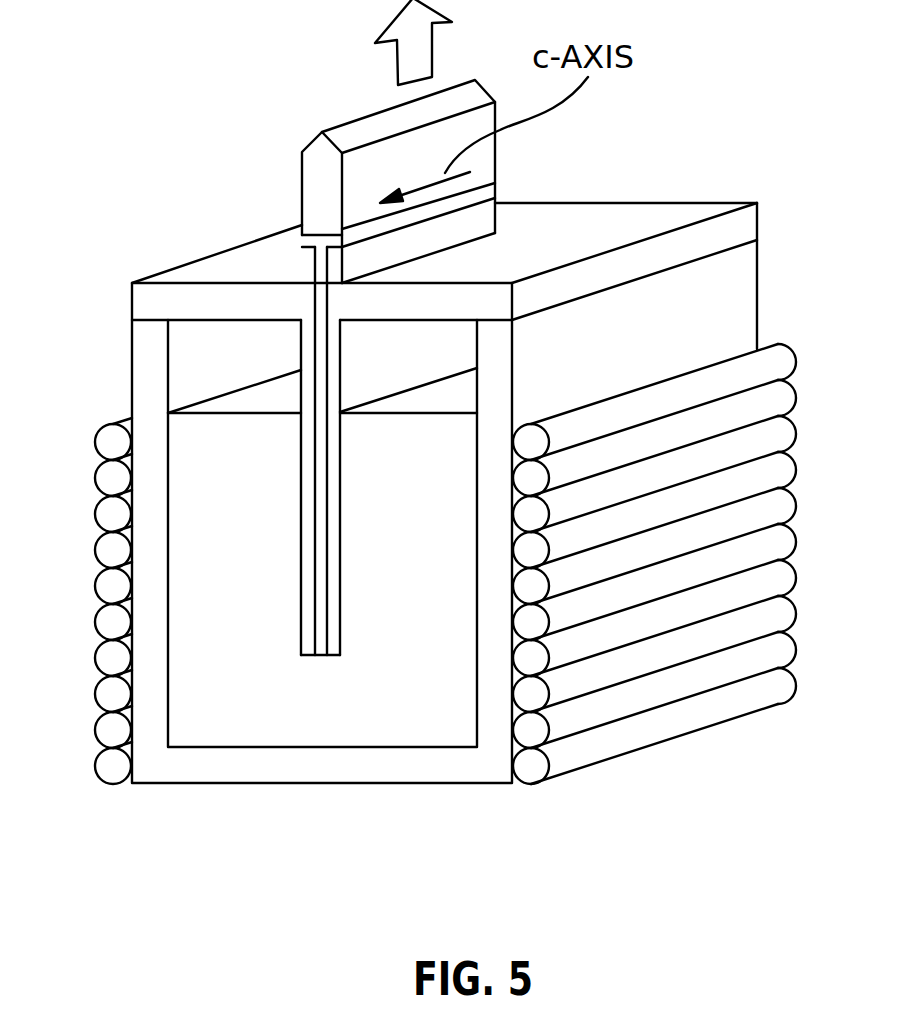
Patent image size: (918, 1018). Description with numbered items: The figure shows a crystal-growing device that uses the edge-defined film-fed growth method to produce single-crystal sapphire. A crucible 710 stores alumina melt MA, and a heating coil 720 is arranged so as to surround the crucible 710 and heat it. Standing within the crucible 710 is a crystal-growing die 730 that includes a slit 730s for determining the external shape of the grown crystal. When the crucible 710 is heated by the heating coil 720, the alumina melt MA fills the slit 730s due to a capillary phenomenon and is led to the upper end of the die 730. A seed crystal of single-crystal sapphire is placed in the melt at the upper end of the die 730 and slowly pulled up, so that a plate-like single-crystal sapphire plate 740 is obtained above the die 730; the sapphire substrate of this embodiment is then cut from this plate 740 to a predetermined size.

The crucible 710 is at (145, 365).
The heating coil 720 is at (667, 725).
The crystal-growing die 730 is at (238, 265).
The slit 730s is at (320, 540).
The single-crystal sapphire plate 740 is at (495, 163).
The alumina melt MA is at (317, 710).